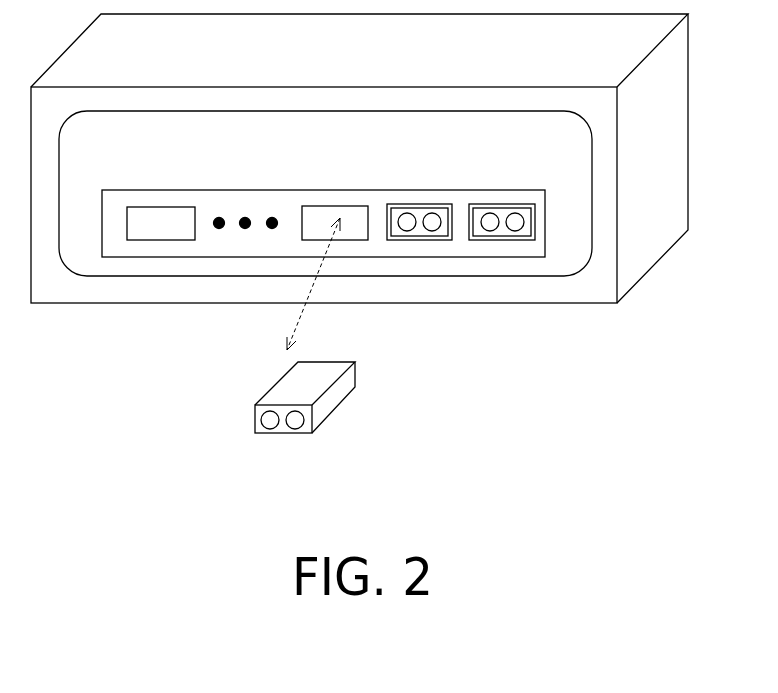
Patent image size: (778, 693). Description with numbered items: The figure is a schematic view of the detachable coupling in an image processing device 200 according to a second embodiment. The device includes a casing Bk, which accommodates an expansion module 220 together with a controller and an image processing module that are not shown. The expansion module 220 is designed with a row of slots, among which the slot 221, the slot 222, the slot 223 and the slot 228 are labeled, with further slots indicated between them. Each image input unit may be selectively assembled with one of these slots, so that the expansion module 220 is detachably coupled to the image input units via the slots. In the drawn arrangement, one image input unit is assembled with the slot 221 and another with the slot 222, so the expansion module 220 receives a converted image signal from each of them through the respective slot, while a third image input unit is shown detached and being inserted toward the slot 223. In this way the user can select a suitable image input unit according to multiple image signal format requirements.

The image processing device 200 is at (385, 238).
The casing Bk is at (675, 137).
The expansion module 220 is at (527, 190).
The slot 228 is at (160, 207).
The slot 223 is at (333, 206).
The slot 222 is at (417, 204).
The slot 221 is at (497, 204).